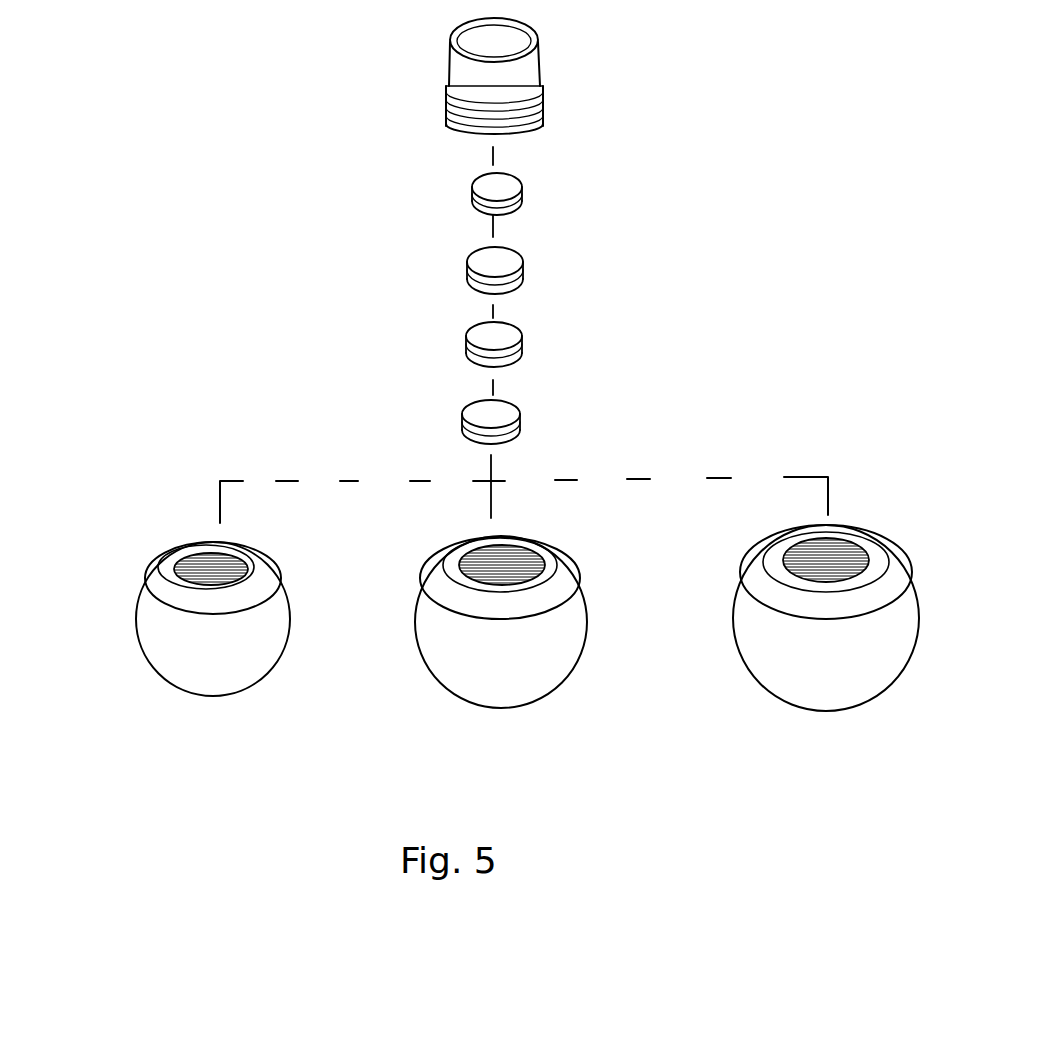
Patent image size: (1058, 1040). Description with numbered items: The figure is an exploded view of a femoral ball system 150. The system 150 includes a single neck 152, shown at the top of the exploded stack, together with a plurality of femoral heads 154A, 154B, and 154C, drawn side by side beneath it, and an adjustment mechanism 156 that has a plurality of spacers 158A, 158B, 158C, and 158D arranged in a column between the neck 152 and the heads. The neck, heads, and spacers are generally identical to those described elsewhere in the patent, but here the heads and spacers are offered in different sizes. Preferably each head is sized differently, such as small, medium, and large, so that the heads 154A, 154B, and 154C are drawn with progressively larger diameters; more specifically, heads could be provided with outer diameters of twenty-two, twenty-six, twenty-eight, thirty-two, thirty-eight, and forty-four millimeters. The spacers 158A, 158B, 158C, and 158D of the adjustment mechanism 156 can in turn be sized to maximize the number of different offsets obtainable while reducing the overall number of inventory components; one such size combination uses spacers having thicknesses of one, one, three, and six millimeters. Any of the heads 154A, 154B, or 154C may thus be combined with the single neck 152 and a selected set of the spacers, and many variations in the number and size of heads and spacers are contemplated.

The femoral ball system 150 is at (111, 219).
The neck 152 is at (430, 72).
The femoral head 154A is at (162, 693).
The femoral head 154B is at (457, 712).
The femoral head 154C is at (772, 710).
The adjustment mechanism 156 is at (360, 282).
The spacer 158A is at (505, 426).
The spacer 158B is at (501, 345).
The spacer 158C is at (507, 268).
The spacer 158D is at (506, 186).